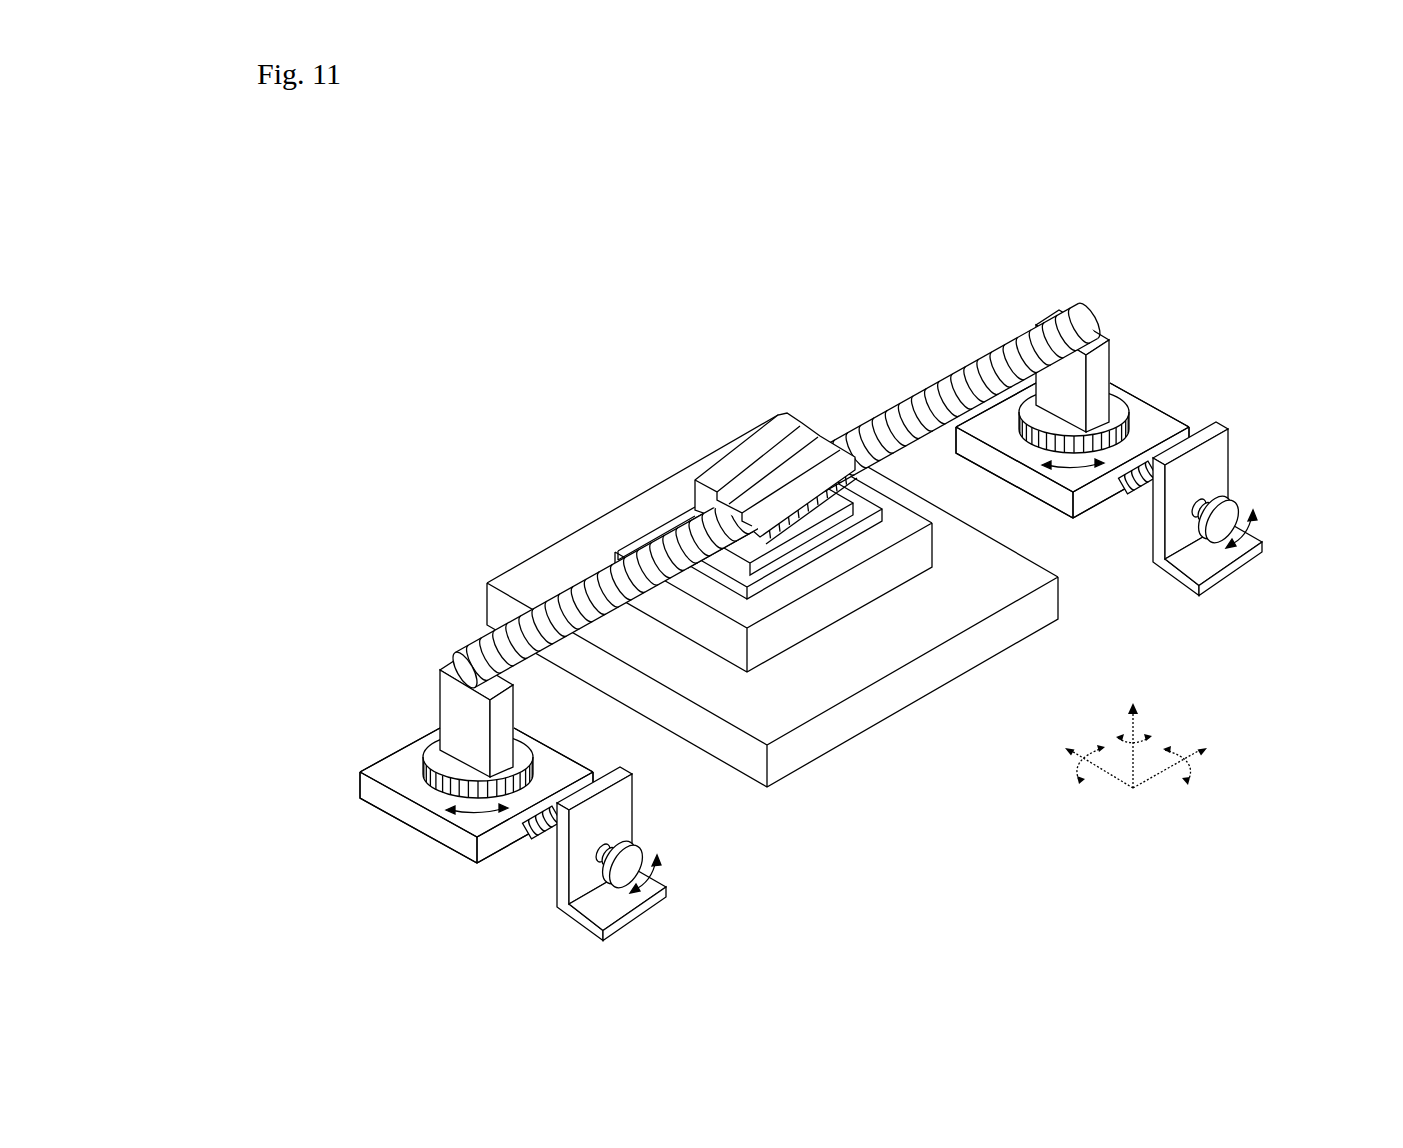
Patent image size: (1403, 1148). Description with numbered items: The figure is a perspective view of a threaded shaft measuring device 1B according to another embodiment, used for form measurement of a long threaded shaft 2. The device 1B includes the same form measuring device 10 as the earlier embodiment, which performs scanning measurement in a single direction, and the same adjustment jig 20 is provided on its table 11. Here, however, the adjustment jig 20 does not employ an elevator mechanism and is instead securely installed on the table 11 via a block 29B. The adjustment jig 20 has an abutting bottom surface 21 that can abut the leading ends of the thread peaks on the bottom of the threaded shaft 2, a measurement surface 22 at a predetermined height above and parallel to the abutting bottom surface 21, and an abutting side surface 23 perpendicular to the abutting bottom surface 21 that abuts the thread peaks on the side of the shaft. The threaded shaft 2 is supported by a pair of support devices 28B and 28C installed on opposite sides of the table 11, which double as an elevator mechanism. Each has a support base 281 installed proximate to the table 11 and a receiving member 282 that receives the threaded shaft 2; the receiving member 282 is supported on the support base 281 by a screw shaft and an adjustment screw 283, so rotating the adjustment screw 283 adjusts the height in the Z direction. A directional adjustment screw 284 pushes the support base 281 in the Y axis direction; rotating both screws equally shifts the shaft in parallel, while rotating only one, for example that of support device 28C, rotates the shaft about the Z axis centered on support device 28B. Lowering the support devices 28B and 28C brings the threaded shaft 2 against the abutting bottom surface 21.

The threaded shaft measuring device 1B is at (803, 249).
The threaded shaft 2 is at (567, 577).
The form measuring device 10 is at (616, 397).
The table 11 is at (762, 415).
The adjustment jig 20 is at (730, 447).
The abutting bottom surface 21 is at (755, 543).
The measurement surface 22 is at (797, 427).
The abutting side surface 23 is at (687, 507).
The block 29B is at (643, 540).
The support device 28B is at (362, 812).
The support device 28C is at (1202, 401).
The support base 281 is at (500, 840).
The receiving member 282 is at (508, 712).
The adjustment screw 283 is at (420, 765).
The directional adjustment screw 284 is at (640, 853).